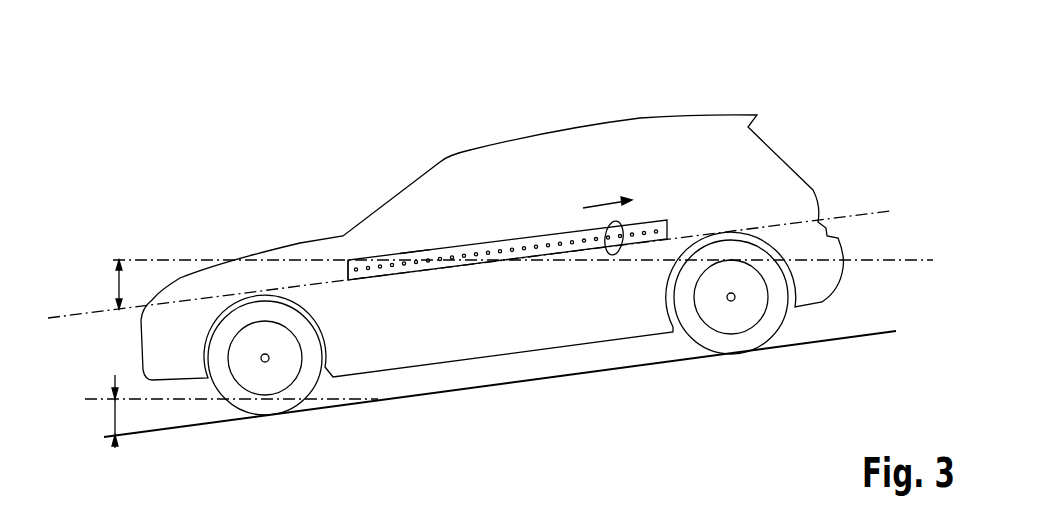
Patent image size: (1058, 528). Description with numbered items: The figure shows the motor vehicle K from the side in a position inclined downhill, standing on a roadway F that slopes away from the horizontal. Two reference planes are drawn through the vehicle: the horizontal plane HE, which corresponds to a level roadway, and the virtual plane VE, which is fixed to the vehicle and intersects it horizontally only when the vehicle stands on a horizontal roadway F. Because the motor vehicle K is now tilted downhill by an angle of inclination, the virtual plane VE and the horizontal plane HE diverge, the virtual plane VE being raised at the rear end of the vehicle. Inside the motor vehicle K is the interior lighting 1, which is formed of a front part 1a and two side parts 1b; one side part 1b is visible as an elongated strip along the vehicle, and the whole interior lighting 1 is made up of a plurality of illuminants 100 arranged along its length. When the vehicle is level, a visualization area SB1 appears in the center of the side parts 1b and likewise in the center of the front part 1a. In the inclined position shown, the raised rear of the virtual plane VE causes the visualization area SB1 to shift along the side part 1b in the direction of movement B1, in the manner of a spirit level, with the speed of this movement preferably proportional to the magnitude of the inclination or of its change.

The motor vehicle K is at (703, 98).
The roadway F is at (568, 378).
The horizontal plane HE is at (145, 258).
The virtual plane VE is at (75, 315).
The interior lighting 1 is at (448, 245).
The front part 1a is at (343, 277).
The side parts 1b is at (417, 250).
The illuminants 100 is at (348, 273).
The direction of movement B1 is at (607, 200).
The visualization area SB1 is at (623, 222).